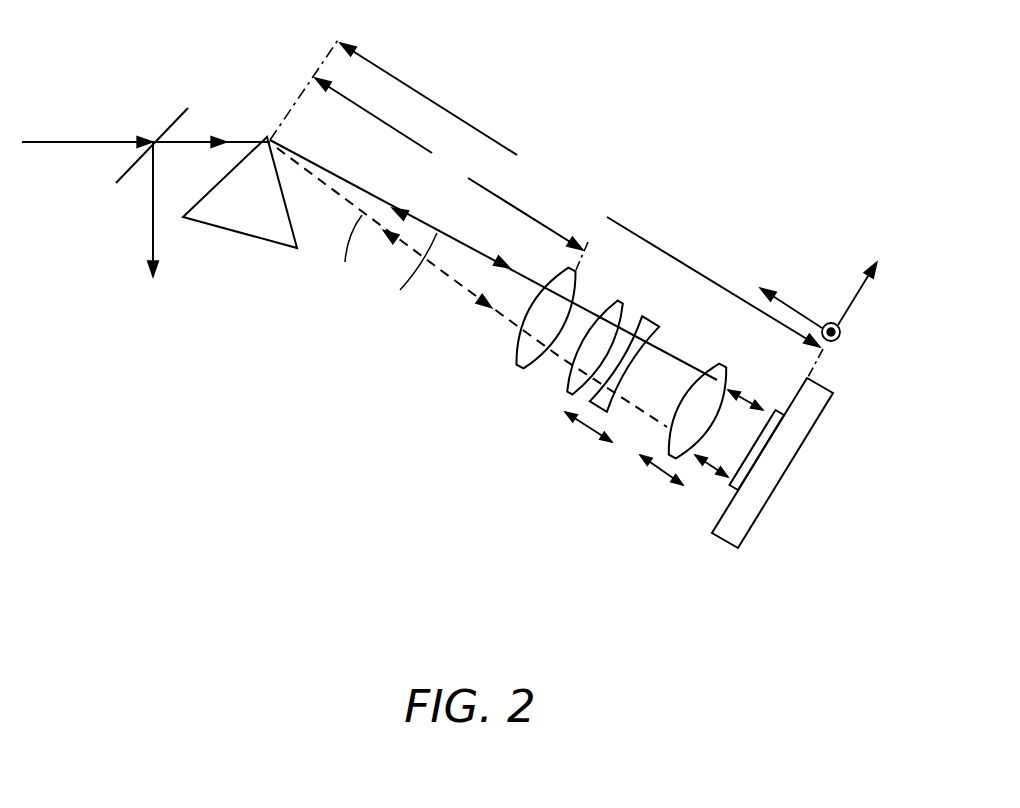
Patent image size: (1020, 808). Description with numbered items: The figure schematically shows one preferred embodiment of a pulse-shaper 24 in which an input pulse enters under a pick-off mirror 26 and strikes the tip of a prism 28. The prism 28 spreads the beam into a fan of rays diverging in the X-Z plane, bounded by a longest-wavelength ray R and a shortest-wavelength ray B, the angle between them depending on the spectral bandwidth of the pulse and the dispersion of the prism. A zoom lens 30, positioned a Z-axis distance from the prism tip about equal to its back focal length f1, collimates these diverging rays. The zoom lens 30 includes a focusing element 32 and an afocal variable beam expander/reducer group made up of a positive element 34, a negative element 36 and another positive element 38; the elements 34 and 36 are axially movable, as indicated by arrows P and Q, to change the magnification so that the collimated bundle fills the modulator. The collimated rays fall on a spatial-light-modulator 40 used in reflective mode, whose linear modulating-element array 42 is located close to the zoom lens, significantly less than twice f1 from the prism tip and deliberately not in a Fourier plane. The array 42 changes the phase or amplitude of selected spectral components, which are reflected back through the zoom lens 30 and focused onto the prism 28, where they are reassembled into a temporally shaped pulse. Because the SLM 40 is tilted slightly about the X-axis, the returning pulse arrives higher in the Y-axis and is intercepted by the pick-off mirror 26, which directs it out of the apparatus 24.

The pulse-shaper 24 is at (270, 557).
The pick-off mirror 26 is at (120, 170).
The prism 28 is at (278, 248).
The zoom lens 30 is at (554, 398).
The focusing element 32 is at (518, 347).
The positive element 34 is at (567, 382).
The negative element 36 is at (655, 322).
The positive element 38 is at (725, 367).
The spatial-light-modulator (SLM) 40 is at (721, 545).
The modulating-element array 42 is at (730, 485).